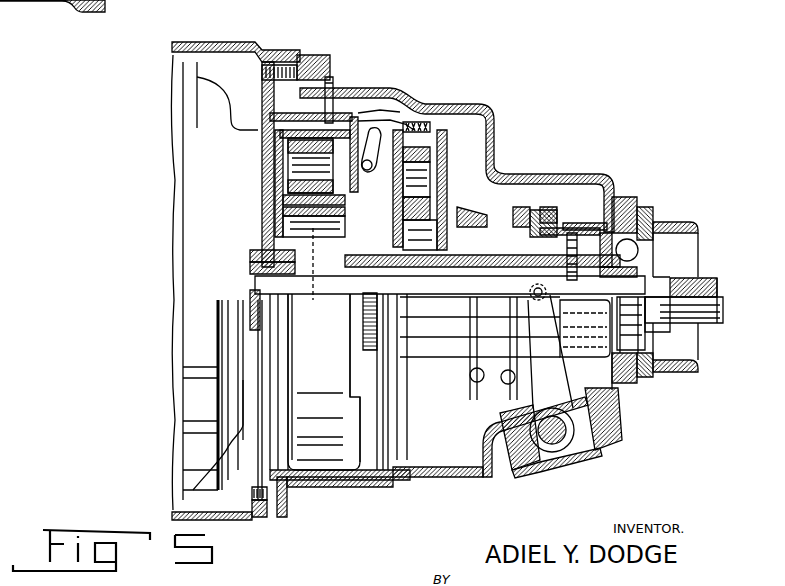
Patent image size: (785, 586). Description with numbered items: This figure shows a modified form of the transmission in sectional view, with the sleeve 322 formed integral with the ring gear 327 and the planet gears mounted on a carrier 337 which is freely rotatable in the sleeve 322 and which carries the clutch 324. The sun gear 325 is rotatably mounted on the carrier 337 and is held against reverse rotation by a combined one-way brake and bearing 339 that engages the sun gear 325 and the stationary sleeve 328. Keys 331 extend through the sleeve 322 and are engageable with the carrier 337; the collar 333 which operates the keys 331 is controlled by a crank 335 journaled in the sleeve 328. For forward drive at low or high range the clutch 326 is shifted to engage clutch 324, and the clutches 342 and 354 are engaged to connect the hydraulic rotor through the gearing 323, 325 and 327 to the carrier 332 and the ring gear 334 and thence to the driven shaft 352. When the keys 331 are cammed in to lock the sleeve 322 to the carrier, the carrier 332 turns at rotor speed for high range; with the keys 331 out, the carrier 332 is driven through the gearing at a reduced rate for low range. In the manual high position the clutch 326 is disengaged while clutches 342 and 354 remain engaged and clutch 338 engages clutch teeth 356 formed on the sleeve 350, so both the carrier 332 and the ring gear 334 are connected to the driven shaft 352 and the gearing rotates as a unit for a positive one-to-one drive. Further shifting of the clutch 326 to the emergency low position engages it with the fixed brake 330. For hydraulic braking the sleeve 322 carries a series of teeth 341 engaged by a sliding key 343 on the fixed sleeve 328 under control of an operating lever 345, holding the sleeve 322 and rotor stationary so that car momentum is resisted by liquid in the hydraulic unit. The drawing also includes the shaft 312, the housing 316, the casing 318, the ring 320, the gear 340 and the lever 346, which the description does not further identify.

The shaft 312 is at (260, 281).
The housing 316 is at (210, 77).
The casing 318 is at (457, 207).
The ring 320 is at (257, 268).
The sleeve 322 is at (253, 255).
The gearing 323 is at (310, 150).
The clutch 324 is at (438, 168).
The sun gear 325 is at (313, 205).
The clutch 326 is at (437, 160).
The ring gear 327 is at (337, 111).
The stationary sleeve 328 is at (352, 114).
The fixed brake 330 is at (420, 220).
The keys 331 is at (291, 66).
The carrier 332 is at (500, 133).
The collar 333 is at (314, 112).
The ring gear 334 is at (398, 137).
The crank 335 is at (330, 77).
The carrier 337 is at (293, 184).
The clutch 338 is at (567, 217).
The combined one-way brake and bearing 339 is at (420, 132).
The gear 340 is at (363, 330).
The teeth 341 is at (360, 118).
The clutch 342 is at (503, 220).
The sliding key 343 is at (375, 120).
The operating lever 345 is at (390, 132).
The lever 346 is at (563, 400).
The sleeve 350 is at (603, 193).
The driven shaft 352 is at (700, 281).
The clutch 354 is at (537, 210).
The clutch teeth 356 is at (613, 217).